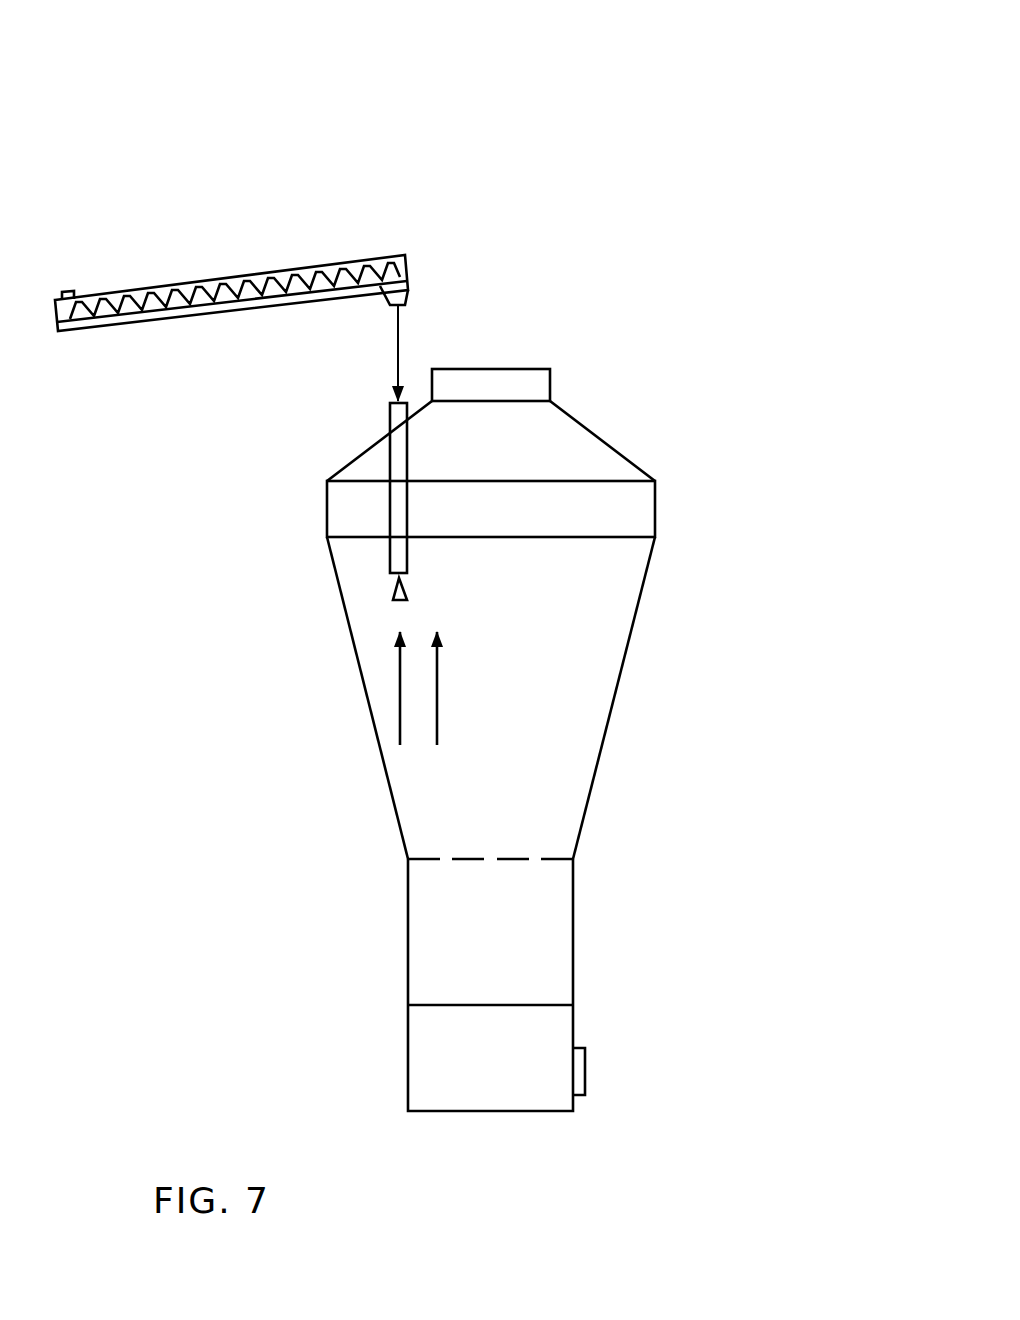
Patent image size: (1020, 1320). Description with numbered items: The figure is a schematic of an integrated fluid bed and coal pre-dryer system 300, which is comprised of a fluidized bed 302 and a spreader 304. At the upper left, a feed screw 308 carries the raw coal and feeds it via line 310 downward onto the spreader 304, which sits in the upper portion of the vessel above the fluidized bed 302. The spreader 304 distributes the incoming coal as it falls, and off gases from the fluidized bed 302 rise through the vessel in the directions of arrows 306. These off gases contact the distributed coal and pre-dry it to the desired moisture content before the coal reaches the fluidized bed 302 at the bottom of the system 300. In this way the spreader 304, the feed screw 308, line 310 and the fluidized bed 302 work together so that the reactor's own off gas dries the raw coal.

The integrated fluid bed and coal pre-dryer system 300 is at (430, 138).
The fluidized bed 302 is at (557, 919).
The spreader 304 is at (388, 590).
The arrows 306 is at (383, 690).
The feed screw 308 is at (178, 280).
The line 310 is at (405, 338).